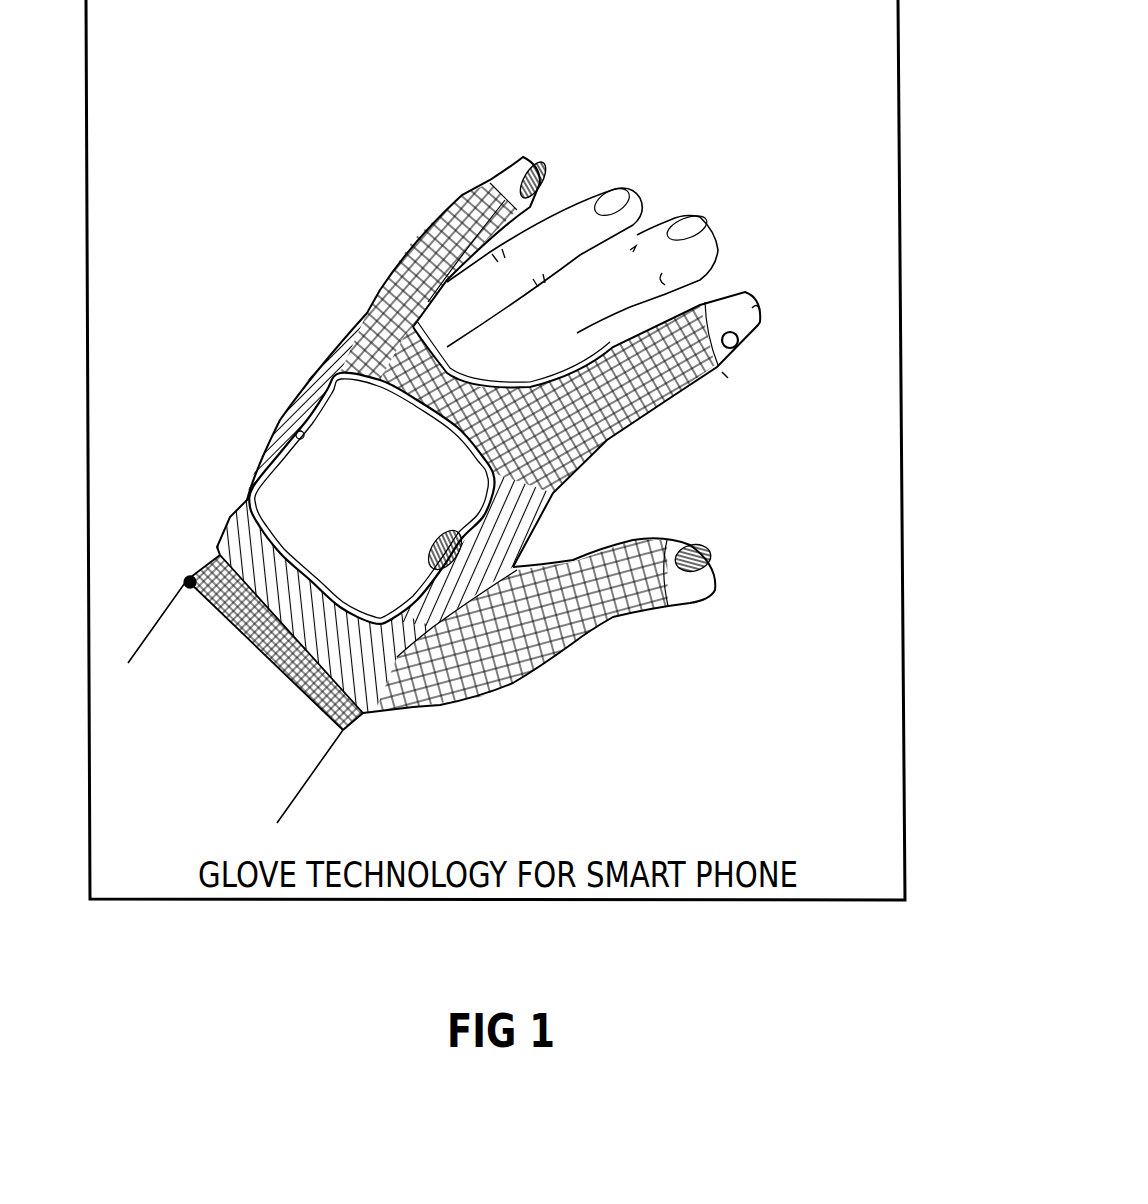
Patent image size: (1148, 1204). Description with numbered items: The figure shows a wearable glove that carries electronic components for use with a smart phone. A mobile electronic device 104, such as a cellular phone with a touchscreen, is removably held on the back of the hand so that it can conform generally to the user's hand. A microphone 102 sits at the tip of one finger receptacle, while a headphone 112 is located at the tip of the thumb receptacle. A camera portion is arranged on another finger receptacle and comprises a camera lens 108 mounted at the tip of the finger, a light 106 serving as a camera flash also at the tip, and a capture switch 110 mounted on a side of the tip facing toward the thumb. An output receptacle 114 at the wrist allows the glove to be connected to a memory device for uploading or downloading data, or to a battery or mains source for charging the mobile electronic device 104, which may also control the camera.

The microphone 102 is at (559, 161).
The mobile electronic device 104 is at (339, 397).
The light 106 is at (771, 282).
The camera lens 108 is at (778, 312).
The capture switch 110 is at (728, 389).
The headphone 112 is at (752, 527).
The output receptacle 114 is at (191, 522).